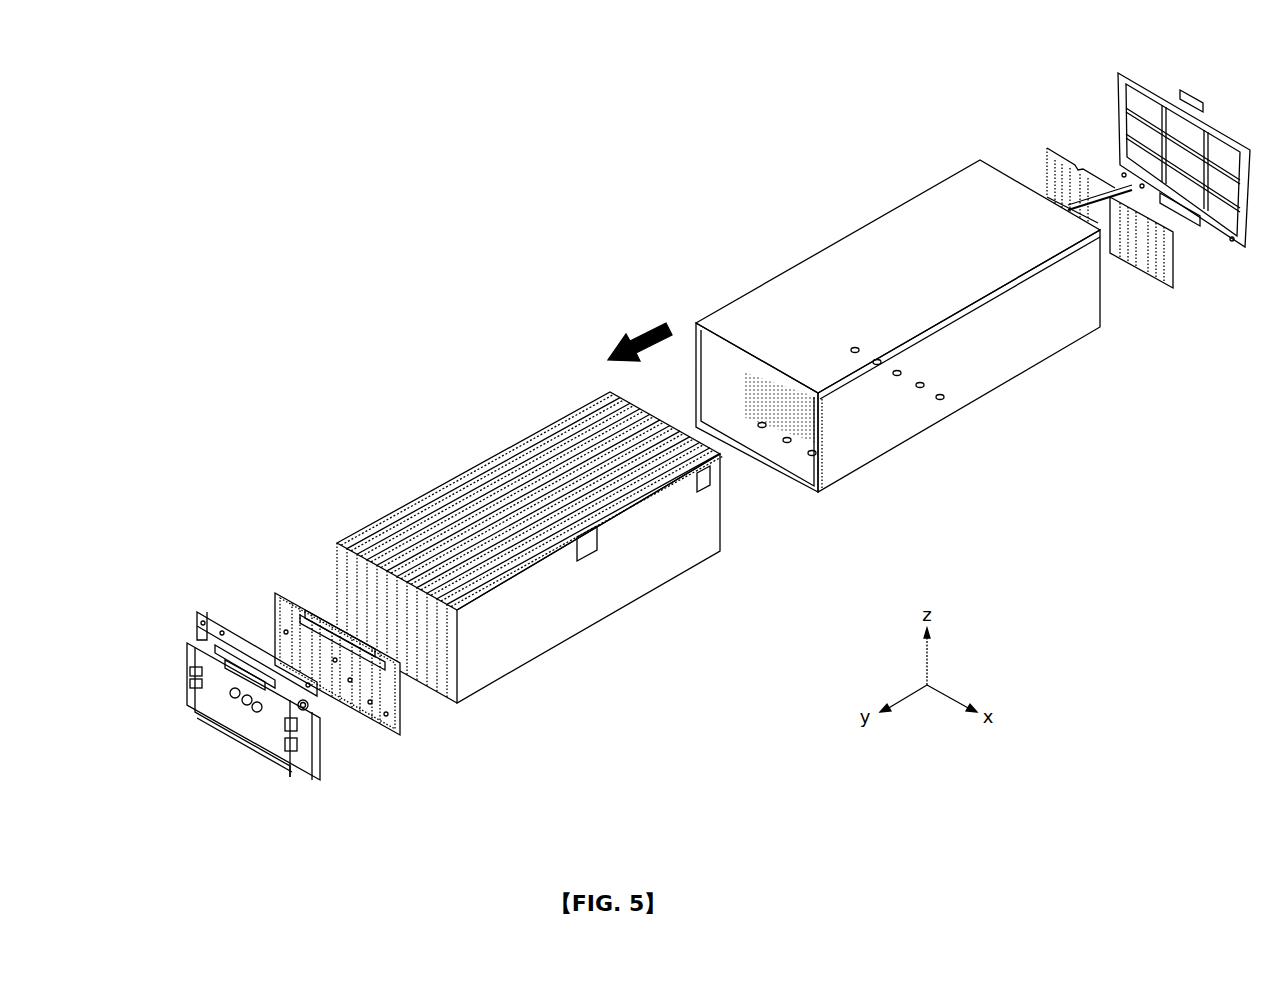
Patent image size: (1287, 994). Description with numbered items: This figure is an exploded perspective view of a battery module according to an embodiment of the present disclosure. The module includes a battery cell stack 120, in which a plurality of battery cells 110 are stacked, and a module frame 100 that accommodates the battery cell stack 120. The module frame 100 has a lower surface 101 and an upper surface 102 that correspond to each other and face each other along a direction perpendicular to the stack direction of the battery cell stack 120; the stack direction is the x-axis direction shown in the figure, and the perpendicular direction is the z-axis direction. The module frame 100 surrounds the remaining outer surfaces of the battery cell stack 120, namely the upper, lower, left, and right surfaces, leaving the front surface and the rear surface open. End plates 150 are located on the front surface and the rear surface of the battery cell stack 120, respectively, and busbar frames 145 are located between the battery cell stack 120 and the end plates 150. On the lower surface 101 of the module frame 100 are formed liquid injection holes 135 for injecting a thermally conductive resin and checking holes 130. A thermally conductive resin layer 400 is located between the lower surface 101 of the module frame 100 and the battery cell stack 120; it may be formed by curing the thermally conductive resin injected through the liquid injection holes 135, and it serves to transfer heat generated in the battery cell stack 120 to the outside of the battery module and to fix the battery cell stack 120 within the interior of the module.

The module frame 100 is at (985, 372).
The lower surface 101 is at (803, 468).
The upper surface 102 is at (805, 282).
The battery cell 110 is at (590, 601).
The battery cell stack 120 is at (425, 515).
The checking hole 130 is at (787, 442).
The liquid injection hole 135 is at (945, 400).
The busbar frame 145 is at (414, 732).
The end plate 150 is at (212, 612).
The thermally conductive resin layer 400 is at (770, 410).